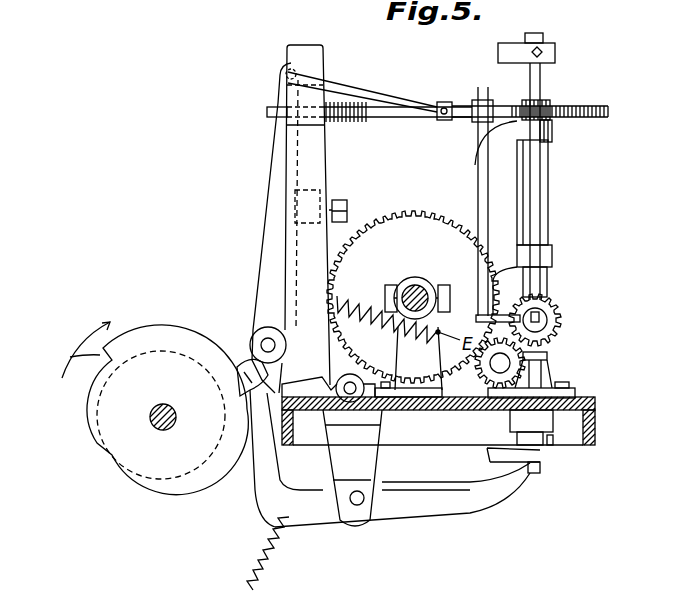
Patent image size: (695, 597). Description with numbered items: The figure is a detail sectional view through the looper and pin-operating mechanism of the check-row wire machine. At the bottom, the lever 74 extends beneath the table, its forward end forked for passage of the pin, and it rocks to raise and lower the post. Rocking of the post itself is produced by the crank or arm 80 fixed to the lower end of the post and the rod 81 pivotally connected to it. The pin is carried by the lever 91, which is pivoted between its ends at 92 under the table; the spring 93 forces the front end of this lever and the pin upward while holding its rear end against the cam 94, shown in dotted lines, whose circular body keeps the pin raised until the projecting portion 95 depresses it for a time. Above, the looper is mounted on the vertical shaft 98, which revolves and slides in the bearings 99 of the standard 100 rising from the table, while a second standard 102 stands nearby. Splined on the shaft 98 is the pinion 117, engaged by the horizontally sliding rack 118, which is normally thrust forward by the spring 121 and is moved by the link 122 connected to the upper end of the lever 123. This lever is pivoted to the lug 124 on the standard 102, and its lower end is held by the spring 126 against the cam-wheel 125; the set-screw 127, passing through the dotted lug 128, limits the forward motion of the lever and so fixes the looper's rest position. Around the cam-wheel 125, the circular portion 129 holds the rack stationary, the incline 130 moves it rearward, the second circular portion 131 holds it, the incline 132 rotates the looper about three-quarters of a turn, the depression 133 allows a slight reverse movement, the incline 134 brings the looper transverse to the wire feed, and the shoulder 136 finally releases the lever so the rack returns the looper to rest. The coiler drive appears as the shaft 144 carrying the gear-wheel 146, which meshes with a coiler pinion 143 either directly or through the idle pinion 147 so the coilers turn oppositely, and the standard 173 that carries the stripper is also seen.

The lever 74 is at (490, 455).
The crank or arm 80 is at (548, 445).
The rod 81 is at (502, 451).
The lever 91 is at (490, 500).
The pivot 92 is at (362, 505).
The spring 93 is at (276, 570).
The cam 94 is at (158, 478).
The projecting portion 95 is at (88, 430).
The shaft 98 is at (538, 200).
The bearings 99 is at (553, 132).
The standard 100 is at (507, 207).
The standard 102 is at (313, 158).
The pinion 117 is at (547, 100).
The rack 118 is at (609, 112).
The spring 121 is at (366, 120).
The link 122 is at (373, 93).
The lever 123 is at (270, 208).
The lug 124 is at (275, 344).
The cam-wheel 125 is at (173, 333).
The spring 126 is at (340, 293).
The set-screw 127 is at (347, 204).
The lug 128 is at (310, 198).
The circular portion 129 is at (113, 467).
The incline 130 is at (230, 467).
The second circular portion 131 is at (247, 448).
The incline 132 is at (239, 350).
The depression 133 is at (234, 352).
The incline 134 is at (230, 353).
The shoulder 136 is at (145, 327).
The pinion 143 is at (558, 324).
The shaft 144 is at (415, 292).
The gear-wheel 146 is at (428, 222).
The idle pinion 147 is at (548, 362).
The standard 173 is at (480, 178).